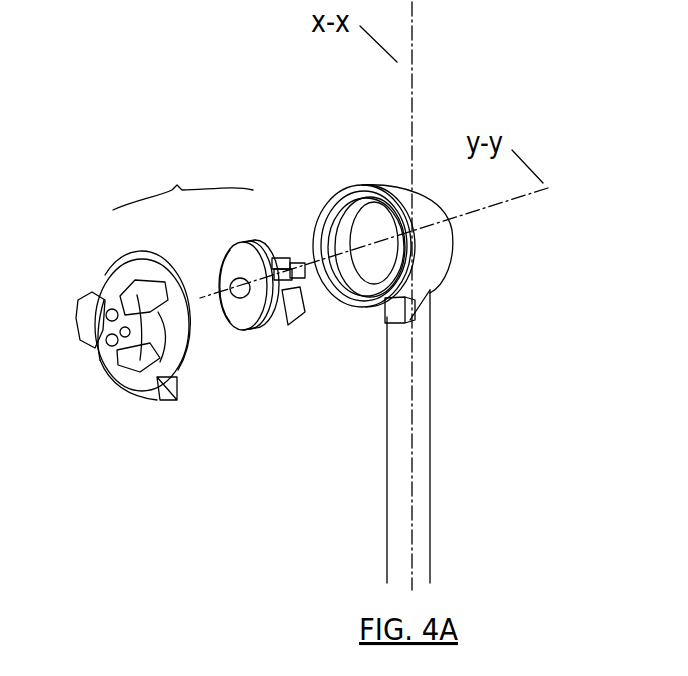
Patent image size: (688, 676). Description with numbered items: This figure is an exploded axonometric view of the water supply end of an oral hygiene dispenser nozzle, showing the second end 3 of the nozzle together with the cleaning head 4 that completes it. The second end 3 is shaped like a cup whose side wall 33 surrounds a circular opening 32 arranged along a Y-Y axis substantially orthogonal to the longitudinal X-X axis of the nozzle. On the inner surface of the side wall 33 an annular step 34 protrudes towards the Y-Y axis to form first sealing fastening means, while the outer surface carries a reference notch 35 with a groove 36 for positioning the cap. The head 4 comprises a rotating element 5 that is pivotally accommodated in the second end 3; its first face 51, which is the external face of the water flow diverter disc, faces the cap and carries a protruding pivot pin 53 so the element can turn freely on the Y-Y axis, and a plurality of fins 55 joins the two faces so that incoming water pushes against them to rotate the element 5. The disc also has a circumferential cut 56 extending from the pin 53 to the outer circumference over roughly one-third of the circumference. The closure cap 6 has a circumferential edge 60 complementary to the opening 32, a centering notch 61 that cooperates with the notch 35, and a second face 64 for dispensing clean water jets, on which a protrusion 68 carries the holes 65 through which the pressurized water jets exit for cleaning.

The second end 3 is at (383, 341).
The cleaning head 4 is at (198, 170).
The rotating element 5 is at (222, 333).
The closure cap 6 is at (119, 360).
The circular opening 32 is at (377, 282).
The side wall 33 is at (350, 172).
The annular step 34 is at (330, 220).
The notch 35 is at (418, 323).
The groove 36 is at (377, 332).
The first face 51 is at (253, 307).
The pivot pin 53 is at (228, 287).
The fins 55 is at (310, 275).
The circumferential cut 56 is at (221, 275).
The circumferential edge 60 is at (95, 268).
The centering notch 61 is at (173, 408).
The second face 64 is at (97, 355).
The holes 65 is at (100, 335).
The protrusion 68 is at (150, 395).